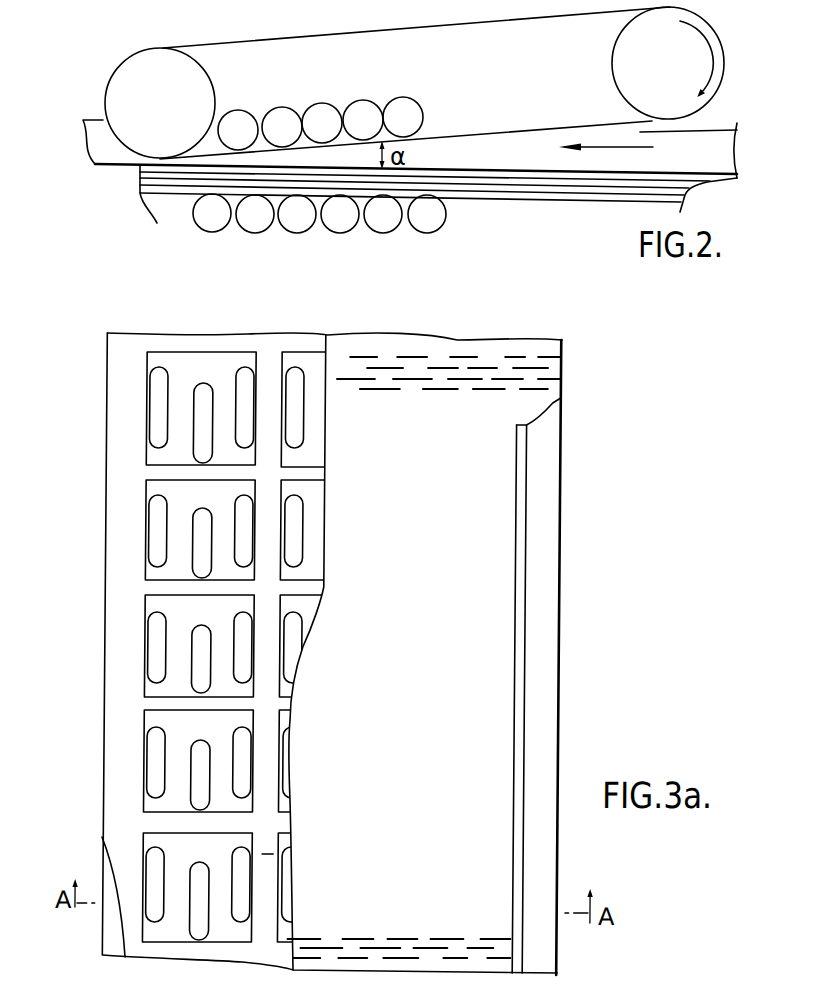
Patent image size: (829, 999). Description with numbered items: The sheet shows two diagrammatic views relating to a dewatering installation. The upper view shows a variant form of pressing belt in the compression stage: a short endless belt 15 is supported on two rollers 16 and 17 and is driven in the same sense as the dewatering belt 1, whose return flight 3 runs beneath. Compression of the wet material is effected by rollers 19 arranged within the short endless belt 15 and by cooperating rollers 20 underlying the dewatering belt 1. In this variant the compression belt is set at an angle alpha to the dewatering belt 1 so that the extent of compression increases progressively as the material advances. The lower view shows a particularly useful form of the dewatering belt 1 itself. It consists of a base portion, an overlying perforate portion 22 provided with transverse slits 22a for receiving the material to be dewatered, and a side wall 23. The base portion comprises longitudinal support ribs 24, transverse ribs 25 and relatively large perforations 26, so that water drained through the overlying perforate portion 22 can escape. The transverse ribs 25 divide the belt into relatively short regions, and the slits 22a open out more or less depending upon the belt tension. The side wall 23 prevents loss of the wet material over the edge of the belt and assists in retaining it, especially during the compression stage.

In FIG. 2, the dewatering belt 1 is at (471, 156).
In FIG. 3a, the dewatering belt 1 is at (106, 955).
In FIG. 2, the return flight 3 is at (551, 206).
In FIG. 3a, the return flight 3 is at (401, 969).
In FIG. 2, the short endless belt 15 is at (313, 31).
In FIG. 2, the roller 16 is at (158, 65).
In FIG. 2, the roller 17 is at (625, 55).
In FIG. 2, the rollers 19 is at (404, 106).
In FIG. 2, the cooperating rollers 20 is at (342, 225).
In FIG. 3a, the overlying perforate portion 22 is at (446, 773).
In FIG. 3a, the slits 22a is at (515, 380).
In FIG. 3a, the side walls 23 is at (550, 630).
In FIG. 3a, the longitudinal support ribs 24 is at (275, 378).
In FIG. 3a, the transverse ribs 25 is at (227, 587).
In FIG. 3a, the perforations 26 is at (209, 395).